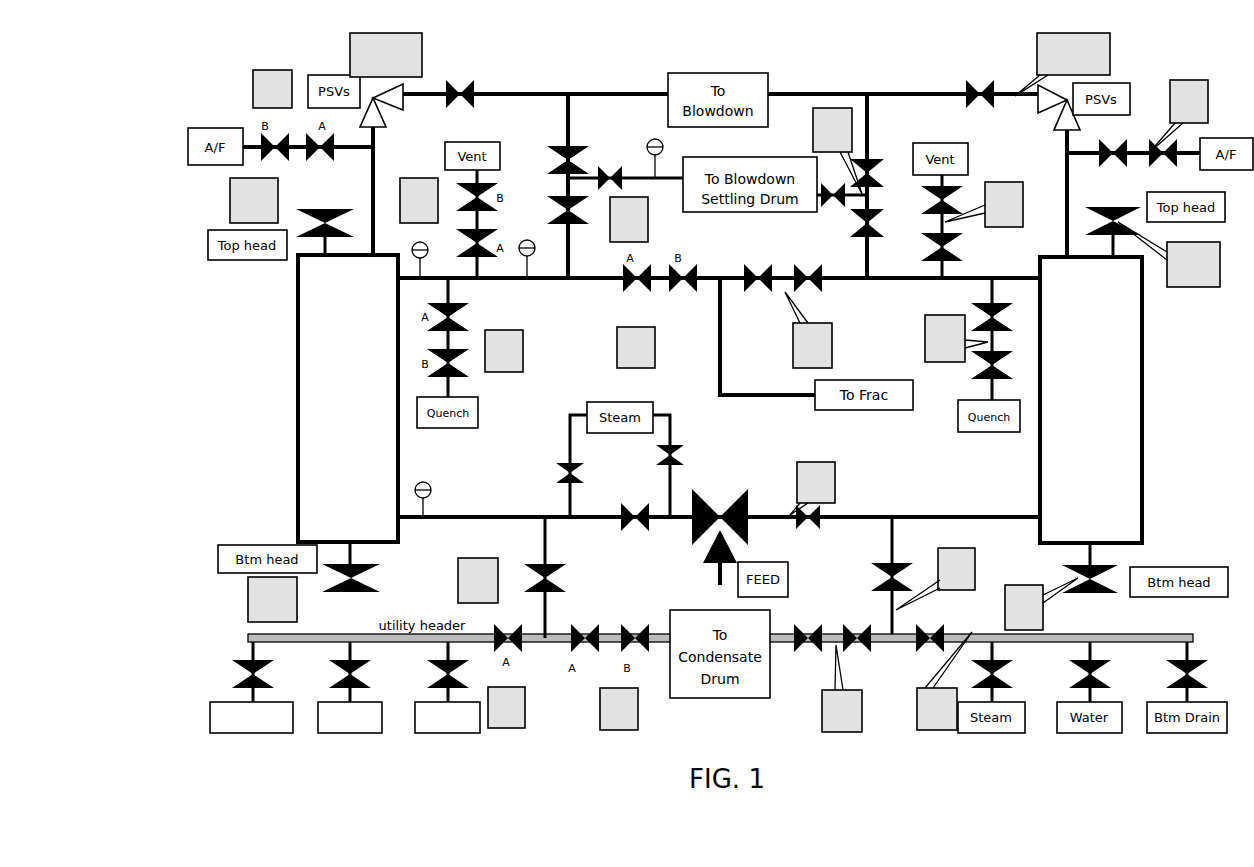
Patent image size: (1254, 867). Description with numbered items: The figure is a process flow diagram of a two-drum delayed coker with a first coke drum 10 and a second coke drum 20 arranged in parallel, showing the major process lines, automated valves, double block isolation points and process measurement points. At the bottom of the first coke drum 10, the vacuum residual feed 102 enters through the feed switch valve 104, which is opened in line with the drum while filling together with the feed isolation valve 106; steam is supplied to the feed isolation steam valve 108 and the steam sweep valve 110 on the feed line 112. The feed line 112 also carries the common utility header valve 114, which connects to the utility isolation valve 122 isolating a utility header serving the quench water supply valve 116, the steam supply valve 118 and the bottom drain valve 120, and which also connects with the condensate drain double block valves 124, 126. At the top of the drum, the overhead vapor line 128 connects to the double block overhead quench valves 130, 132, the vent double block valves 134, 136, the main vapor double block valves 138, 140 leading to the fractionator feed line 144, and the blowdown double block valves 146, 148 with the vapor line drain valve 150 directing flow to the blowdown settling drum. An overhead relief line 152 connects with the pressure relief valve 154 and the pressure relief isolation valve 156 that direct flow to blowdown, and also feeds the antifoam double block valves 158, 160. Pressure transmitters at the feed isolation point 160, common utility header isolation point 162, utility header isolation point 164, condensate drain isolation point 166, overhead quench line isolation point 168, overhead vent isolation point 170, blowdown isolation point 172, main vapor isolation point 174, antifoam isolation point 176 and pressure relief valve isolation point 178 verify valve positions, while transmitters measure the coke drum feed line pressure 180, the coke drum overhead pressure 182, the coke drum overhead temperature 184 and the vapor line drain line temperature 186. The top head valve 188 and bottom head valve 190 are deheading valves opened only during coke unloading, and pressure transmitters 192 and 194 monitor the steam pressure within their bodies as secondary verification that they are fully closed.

The first coke drum 10 is at (337, 404).
The second coke drum 20 is at (1080, 404).
The vacuum residual feed 102 is at (718, 572).
The feed switch valve 104 is at (724, 490).
The feed isolation valve 106 is at (626, 535).
The feed isolation steam valve 108 is at (656, 455).
The steam sweep valve 110 is at (556, 473).
The feed line 112 is at (494, 512).
The common utility header valve 114 is at (552, 560).
The quench water supply valve 116 is at (329, 668).
The steam supply valve 118 is at (427, 668).
The bottom drain valve 120 is at (232, 668).
The utility isolation valve 122 is at (516, 650).
The condensate drain double block valve 124 is at (583, 654).
The condensate drain double block valve 126 is at (640, 654).
The overhead vapor line 128 is at (556, 288).
The double block overhead quench valve 130 is at (468, 375).
The double block overhead quench valve 132 is at (468, 312).
The vent double block valve 134 is at (492, 240).
The vent double block valve 136 is at (492, 190).
The main vapor double block valve 138 is at (626, 292).
The main vapor double block valve 140 is at (688, 294).
The fractionator feed line 144 is at (805, 400).
The blowdown double block valve 146 is at (572, 226).
The blowdown double block valve 148 is at (576, 147).
The vapor line drain valve 150 is at (606, 166).
The overhead relief line 152 is at (373, 172).
The pressure relief valve 154 is at (392, 112).
The pressure relief isolation valve 156 is at (462, 79).
The antifoam double block valve 158 is at (278, 163).
The antifoam double block valve 160 is at (322, 163).
The common utility header isolation point 162 is at (498, 598).
The utility header isolation point 164 is at (493, 687).
The condensate drain isolation point 166 is at (606, 688).
The overhead quench line isolation point 168 is at (485, 340).
The overhead vent isolation point 170 is at (438, 200).
The blowdown isolation point 172 is at (610, 205).
The main vapor isolation point 174 is at (648, 327).
The antifoam isolation point 176 is at (288, 108).
The pressure relief valve isolation point 178 is at (413, 77).
The coke drum feed line pressure transmitter 180 is at (430, 484).
The coke drum overhead pressure transmitter 182 is at (412, 246).
The coke drum overhead temperature transmitter 184 is at (535, 246).
The vapor line drain line temperature transmitter 186 is at (663, 147).
The top head valve 188 is at (302, 212).
The bottom head valve 190 is at (362, 592).
The pressure transmitter 192 is at (278, 200).
The pressure transmitter 194 is at (297, 585).